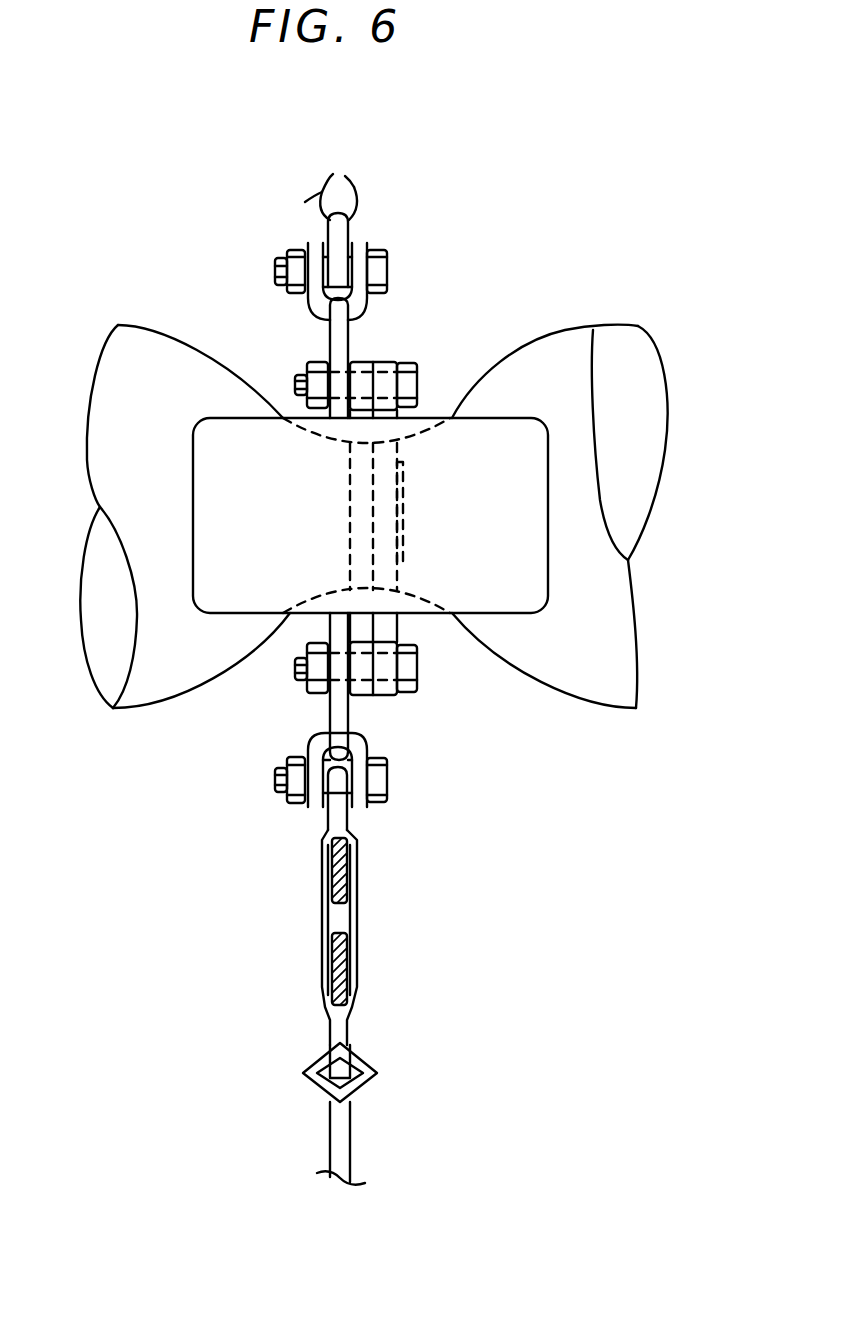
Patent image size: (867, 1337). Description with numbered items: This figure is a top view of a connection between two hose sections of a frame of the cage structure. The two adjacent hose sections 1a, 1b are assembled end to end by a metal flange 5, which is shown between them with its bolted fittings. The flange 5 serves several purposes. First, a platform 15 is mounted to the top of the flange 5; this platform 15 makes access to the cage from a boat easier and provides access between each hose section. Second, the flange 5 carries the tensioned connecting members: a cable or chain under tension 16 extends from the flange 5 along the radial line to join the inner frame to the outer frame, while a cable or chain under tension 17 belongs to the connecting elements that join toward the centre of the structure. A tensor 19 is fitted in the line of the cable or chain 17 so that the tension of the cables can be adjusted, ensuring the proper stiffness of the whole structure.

The hose section 1a is at (102, 395).
The hose section 1b is at (571, 374).
The metal flange 5 is at (355, 630).
The platform 15 is at (511, 546).
The cables or chains under tension 16 is at (357, 193).
The cables or chains under tension 17 is at (337, 1148).
The tensor 19 is at (347, 892).